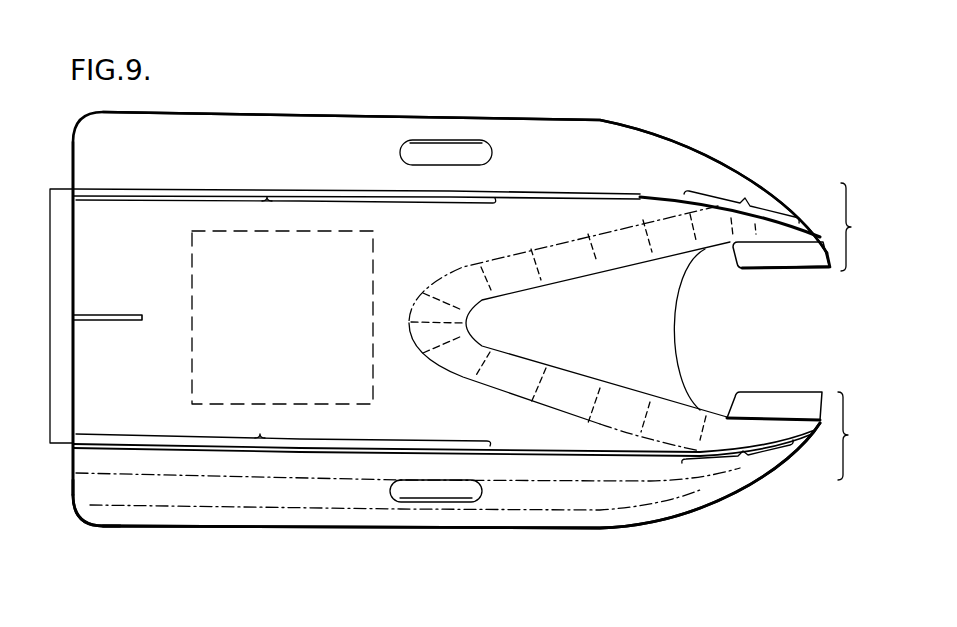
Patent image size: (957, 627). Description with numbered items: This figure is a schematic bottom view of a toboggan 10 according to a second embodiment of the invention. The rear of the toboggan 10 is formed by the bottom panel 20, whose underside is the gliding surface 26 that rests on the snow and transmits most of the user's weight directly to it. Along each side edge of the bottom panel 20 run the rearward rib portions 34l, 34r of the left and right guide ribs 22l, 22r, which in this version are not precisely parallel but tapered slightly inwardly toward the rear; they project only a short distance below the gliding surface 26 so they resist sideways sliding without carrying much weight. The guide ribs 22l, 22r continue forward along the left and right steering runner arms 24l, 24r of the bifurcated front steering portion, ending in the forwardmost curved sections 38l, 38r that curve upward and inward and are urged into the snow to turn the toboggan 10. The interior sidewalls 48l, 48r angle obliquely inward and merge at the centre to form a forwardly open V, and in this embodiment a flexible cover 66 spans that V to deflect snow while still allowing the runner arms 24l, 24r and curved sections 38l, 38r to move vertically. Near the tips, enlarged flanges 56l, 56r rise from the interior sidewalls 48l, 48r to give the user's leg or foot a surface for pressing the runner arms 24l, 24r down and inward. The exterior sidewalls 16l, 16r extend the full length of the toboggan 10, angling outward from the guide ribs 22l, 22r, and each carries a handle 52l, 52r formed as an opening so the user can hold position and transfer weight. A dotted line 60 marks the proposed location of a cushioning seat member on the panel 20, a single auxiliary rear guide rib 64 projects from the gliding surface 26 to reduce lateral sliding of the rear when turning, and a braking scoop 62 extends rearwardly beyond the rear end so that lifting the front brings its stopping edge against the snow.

The toboggan 10 is at (653, 114).
The right exterior sidewall 16r is at (343, 133).
The left exterior sidewall 16l is at (273, 508).
The bottom panel 20 is at (177, 348).
The right guide rib 22r is at (197, 188).
The left guide rib 22l is at (201, 451).
The right steering runner arm 24r is at (865, 227).
The left steering runner arm 24l is at (860, 436).
The gliding surface 26 is at (83, 402).
The right rearward rib portion 34r is at (286, 214).
The left rearward rib portion 34l is at (283, 427).
The right forwardmost curved section 38r is at (730, 204).
The left forwardmost curved section 38l is at (737, 468).
The right interior sidewall 48r is at (493, 262).
The left interior sidewall 48l is at (442, 353).
The right handle 52r is at (473, 148).
The left handle 52l is at (438, 505).
The right enlarged flange 56r is at (793, 258).
The left enlarged flange 56l is at (779, 396).
The dotted line 60 is at (380, 265).
The braking scoop 62 is at (58, 240).
The auxiliary rear guide rib 64 is at (121, 313).
The cover 66 is at (583, 334).